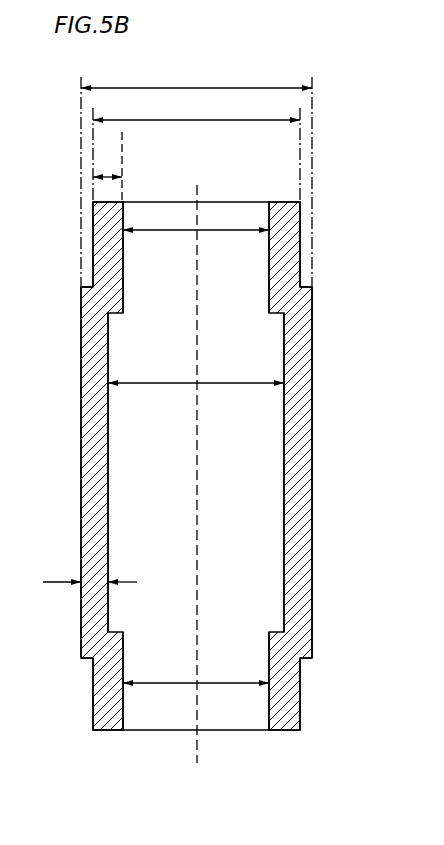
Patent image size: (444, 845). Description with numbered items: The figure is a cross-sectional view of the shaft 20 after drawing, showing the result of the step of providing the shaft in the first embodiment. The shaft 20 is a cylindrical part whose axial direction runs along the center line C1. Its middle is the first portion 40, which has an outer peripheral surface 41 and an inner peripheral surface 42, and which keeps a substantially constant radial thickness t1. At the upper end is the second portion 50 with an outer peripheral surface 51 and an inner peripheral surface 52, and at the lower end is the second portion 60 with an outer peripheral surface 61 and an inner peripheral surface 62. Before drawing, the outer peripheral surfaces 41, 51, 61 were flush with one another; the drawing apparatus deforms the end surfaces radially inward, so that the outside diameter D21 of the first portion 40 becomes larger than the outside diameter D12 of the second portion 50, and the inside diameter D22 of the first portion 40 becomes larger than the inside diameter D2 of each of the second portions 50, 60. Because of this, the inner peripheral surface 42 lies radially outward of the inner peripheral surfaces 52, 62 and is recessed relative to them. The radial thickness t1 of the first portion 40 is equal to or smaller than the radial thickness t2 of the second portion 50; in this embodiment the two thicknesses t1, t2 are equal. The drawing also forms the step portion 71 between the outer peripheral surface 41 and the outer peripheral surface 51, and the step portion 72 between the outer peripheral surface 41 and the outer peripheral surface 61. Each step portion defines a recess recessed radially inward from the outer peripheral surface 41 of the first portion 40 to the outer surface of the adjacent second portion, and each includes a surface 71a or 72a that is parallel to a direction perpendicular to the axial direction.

The shaft 20 is at (338, 214).
The first portion 40 is at (100, 513).
The outer peripheral surface of the first portion 41 is at (81, 408).
The inner peripheral surface of the first portion 42 is at (108, 445).
The second portion 50 is at (118, 268).
The outer peripheral surface of the second portion 51 is at (92, 228).
The inner peripheral surface of the second portion 52 is at (124, 285).
The second portion 60 is at (118, 668).
The outer peripheral surface of the second portion 61 is at (93, 705).
The inner peripheral surface of the second portion 62 is at (123, 713).
The step portion 71 is at (87, 283).
The surface 71a is at (82, 288).
The step portion 72 is at (88, 665).
The surface 72a is at (84, 660).
The central axis C1 is at (197, 452).
The outside diameter D21 is at (196, 173).
The outside diameter D12 is at (196, 146).
The inside diameter D2 is at (196, 444).
The inside diameter D22 is at (196, 370).
The thickness t1 is at (90, 570).
The thickness t2 is at (107, 167).